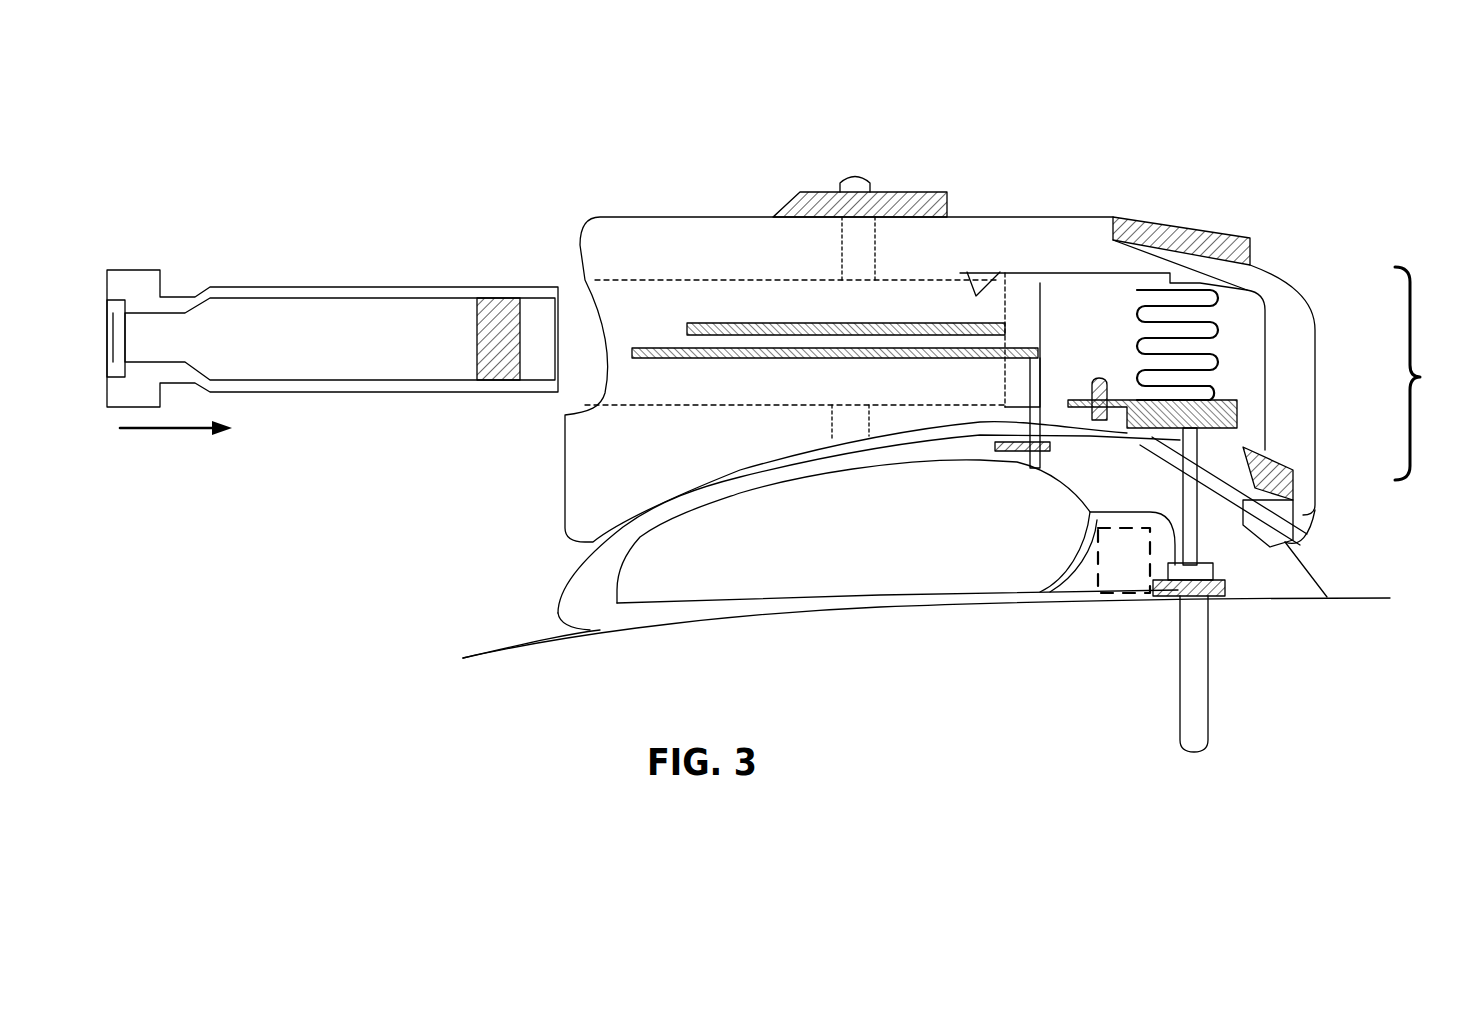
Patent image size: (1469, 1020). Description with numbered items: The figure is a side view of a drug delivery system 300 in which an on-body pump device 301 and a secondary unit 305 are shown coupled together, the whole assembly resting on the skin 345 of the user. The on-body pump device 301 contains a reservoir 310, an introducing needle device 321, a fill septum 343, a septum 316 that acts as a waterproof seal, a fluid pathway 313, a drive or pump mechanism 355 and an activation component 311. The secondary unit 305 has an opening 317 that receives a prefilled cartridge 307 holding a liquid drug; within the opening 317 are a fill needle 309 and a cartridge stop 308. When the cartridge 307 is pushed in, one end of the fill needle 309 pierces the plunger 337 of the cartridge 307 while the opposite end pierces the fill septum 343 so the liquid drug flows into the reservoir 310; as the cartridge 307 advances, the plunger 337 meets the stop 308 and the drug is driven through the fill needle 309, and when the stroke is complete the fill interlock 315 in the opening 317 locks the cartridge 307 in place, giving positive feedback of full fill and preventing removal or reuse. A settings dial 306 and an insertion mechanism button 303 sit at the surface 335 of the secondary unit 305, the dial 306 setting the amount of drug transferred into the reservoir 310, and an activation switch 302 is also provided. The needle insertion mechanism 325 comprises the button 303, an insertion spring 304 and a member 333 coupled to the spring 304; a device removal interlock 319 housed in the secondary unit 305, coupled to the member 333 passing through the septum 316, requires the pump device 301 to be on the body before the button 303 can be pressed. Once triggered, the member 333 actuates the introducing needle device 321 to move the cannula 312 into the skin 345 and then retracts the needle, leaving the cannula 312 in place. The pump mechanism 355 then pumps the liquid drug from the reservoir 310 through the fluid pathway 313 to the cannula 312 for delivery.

The drug delivery system 300 is at (234, 147).
The on-body pump device 301 is at (1313, 578).
The activation switch 302 is at (1295, 490).
The insertion mechanism button 303 is at (1250, 248).
The insertion spring 304 is at (1225, 333).
The secondary unit 305 is at (628, 250).
The settings dial 306 is at (897, 192).
The prefilled cartridge 307 is at (298, 287).
The cartridge stop 308 is at (735, 323).
The fill needle 309 is at (650, 348).
The reservoir 310 is at (805, 585).
The activation component 311 is at (1288, 542).
The cannula 312 is at (1208, 680).
The fluid pathway 313 is at (1072, 519).
The fill interlock 315 is at (1033, 262).
The septum 316 is at (1217, 508).
The opening 317 is at (655, 407).
The device removal interlock 319 is at (1086, 405).
The introducing needle device 321 is at (1250, 604).
The needle insertion mechanism 325 is at (1432, 373).
The member 333 is at (1215, 438).
The surface 335 is at (1290, 270).
The plunger 337 is at (500, 300).
The fill septum 343 is at (1072, 454).
The skin 345 is at (520, 653).
The drive or pump mechanism 355 is at (1121, 575).